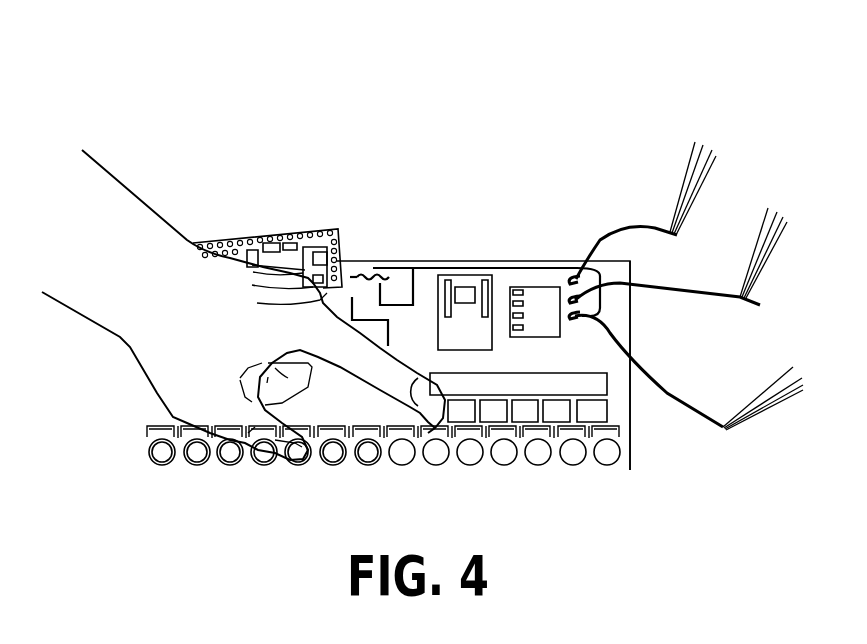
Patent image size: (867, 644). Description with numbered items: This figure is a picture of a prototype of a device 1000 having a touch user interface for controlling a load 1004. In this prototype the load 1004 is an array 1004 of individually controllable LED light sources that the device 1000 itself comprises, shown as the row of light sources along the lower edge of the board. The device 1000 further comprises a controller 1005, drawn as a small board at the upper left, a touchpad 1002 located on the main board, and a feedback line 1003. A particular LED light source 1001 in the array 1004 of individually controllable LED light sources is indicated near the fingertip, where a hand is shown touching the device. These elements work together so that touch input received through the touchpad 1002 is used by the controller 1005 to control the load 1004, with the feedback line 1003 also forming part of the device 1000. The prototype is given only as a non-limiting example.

The device 1000 is at (633, 93).
The particular LED light source 1001 is at (426, 408).
The touchpad 1002 is at (488, 386).
The feedback line 1003 is at (566, 369).
The load 1004 is at (630, 452).
The controller 1005 is at (277, 259).